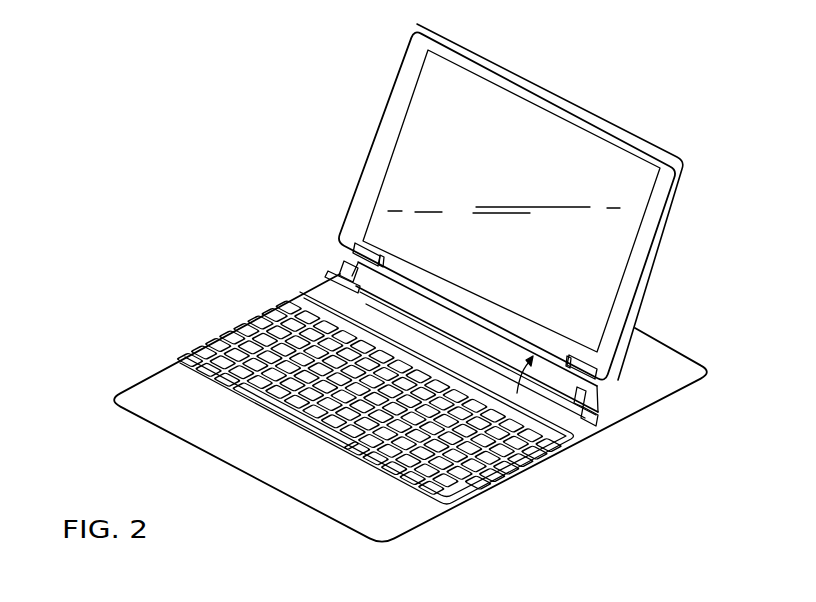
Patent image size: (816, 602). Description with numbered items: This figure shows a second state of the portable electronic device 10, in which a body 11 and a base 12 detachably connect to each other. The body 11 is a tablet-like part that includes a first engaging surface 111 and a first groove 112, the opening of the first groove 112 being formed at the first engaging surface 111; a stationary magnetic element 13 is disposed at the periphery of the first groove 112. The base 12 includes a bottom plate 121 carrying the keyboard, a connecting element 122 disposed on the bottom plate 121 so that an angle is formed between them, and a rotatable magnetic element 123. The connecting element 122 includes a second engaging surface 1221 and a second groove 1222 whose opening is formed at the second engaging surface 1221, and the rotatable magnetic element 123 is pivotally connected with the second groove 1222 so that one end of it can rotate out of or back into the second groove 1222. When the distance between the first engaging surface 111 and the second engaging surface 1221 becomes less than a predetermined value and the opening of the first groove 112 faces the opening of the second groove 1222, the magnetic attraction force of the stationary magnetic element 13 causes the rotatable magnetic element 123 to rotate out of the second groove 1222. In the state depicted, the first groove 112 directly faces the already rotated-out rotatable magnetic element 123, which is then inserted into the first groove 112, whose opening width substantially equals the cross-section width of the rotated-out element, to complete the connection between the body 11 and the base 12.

The portable electronic device 10 is at (115, 112).
The body 11 is at (413, 54).
The base 12 is at (106, 397).
The stationary magnetic element 13 is at (372, 247).
The first engaging surface 111 is at (593, 424).
The first groove 112 is at (360, 255).
The bottom plate 121 is at (172, 370).
The connecting element 122 is at (607, 422).
The rotatable magnetic element 123 is at (347, 268).
The second engaging surface 1221 is at (597, 403).
The second groove 1222 is at (338, 282).